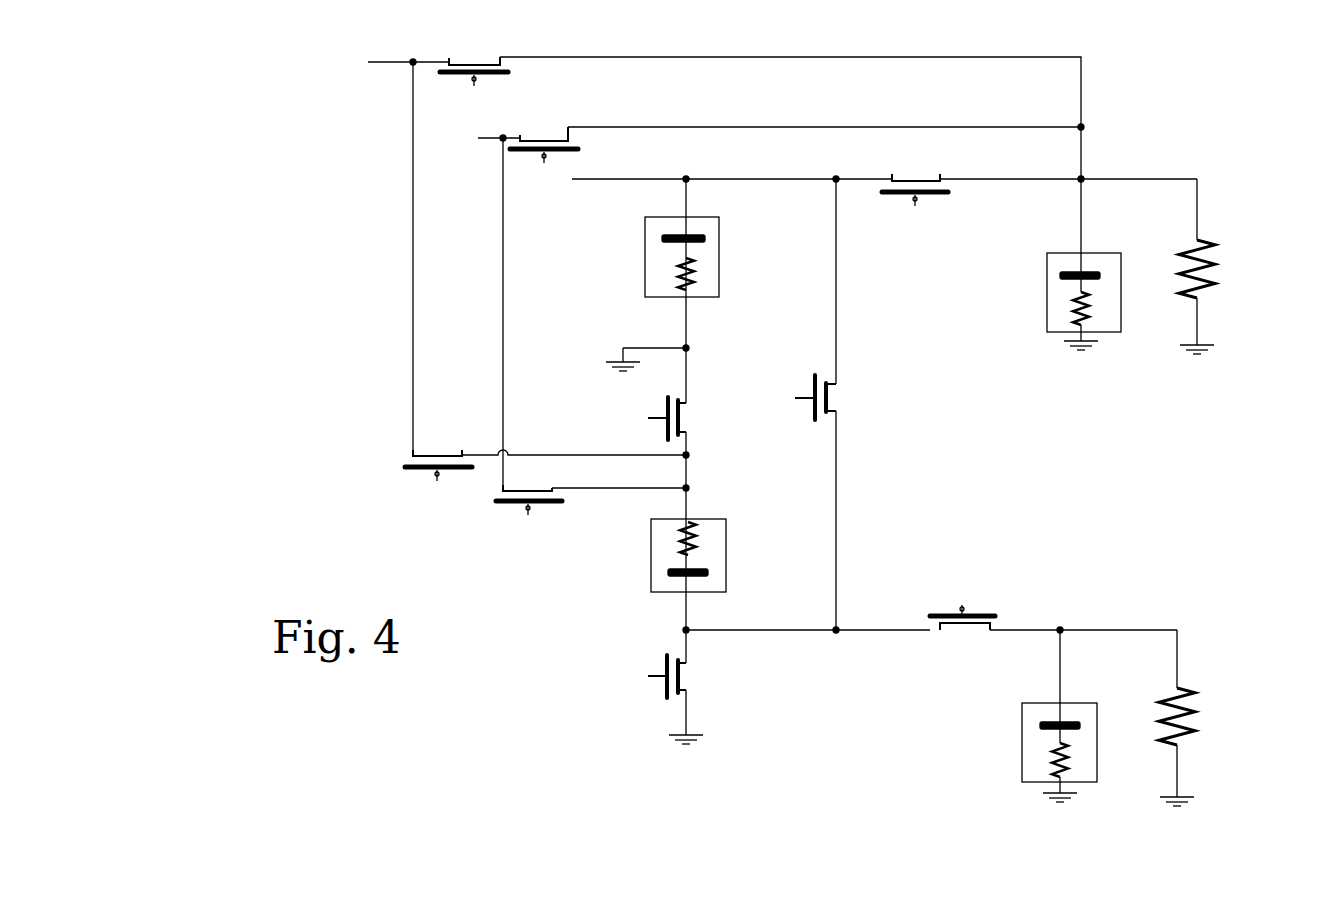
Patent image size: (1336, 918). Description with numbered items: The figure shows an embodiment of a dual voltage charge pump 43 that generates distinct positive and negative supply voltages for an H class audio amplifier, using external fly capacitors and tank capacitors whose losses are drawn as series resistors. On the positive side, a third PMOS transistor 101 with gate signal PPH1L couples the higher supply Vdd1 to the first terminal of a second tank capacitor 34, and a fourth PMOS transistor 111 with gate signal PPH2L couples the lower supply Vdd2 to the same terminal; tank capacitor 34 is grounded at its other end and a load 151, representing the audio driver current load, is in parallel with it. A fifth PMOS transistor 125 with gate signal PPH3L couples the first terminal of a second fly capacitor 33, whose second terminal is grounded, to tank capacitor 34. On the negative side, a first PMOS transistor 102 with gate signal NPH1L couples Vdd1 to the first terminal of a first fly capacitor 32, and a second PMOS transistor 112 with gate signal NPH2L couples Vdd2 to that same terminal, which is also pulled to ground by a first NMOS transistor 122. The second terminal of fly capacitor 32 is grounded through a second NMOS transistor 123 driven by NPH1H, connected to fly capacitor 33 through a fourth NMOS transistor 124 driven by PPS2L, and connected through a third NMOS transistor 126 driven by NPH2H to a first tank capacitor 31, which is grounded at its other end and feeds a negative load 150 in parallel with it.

The dual voltage charge pump 43 is at (350, 216).
The third PMOS transistor 101 is at (502, 77).
The fourth PMOS transistor 111 is at (572, 150).
The first PMOS transistor 102 is at (412, 466).
The second PMOS transistor 112 is at (554, 504).
The first NMOS transistor 122 is at (664, 428).
The fourth NMOS transistor 124 is at (811, 418).
The second NMOS transistor 123 is at (663, 688).
The fifth PMOS transistor 125 is at (942, 195).
The third NMOS transistor 126 is at (995, 617).
The second fly capacitor 33 is at (720, 270).
The first fly capacitor 32 is at (726, 555).
The second tank capacitor 34 is at (1121, 258).
The first tank capacitor 31 is at (1092, 704).
The load 151 is at (1212, 272).
The negative load 150 is at (1192, 728).